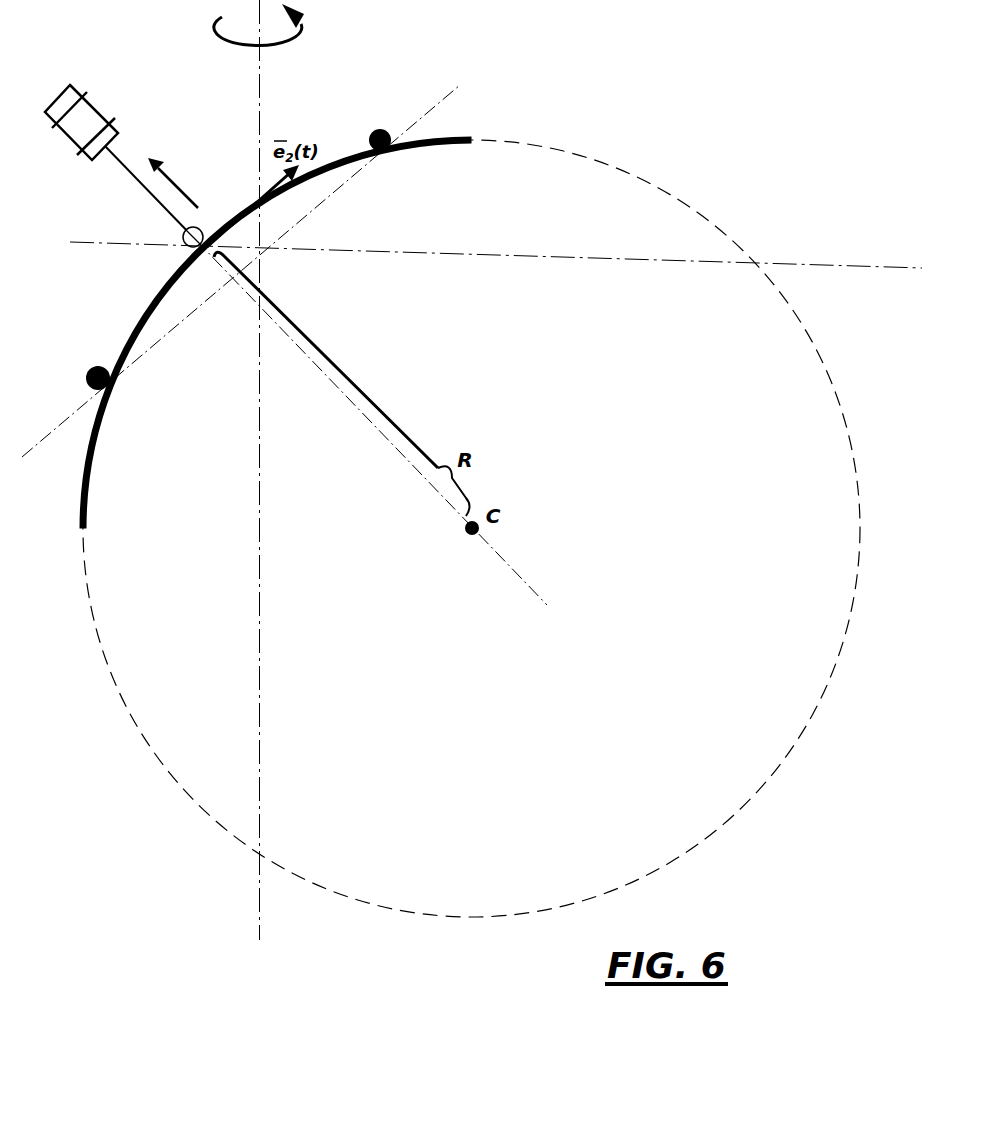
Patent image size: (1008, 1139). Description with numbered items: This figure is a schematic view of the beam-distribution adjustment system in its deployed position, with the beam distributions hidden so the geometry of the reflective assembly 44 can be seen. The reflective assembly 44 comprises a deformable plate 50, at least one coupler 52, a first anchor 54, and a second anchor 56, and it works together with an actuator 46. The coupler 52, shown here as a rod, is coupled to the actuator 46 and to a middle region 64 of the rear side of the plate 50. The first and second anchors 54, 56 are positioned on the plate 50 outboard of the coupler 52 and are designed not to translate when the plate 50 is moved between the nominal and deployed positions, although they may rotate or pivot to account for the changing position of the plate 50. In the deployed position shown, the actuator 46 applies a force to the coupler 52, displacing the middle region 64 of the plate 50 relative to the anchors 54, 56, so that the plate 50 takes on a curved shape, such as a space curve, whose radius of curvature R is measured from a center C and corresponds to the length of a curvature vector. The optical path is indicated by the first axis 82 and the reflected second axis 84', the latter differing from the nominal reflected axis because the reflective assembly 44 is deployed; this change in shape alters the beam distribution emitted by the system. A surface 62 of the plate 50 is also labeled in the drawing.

The reflective assembly 44 is at (90, 306).
The actuator 46 is at (65, 93).
The deformable plate 50 is at (85, 493).
The coupler 52 is at (207, 228).
The first anchor 54 is at (375, 133).
The second anchor 56 is at (97, 370).
The tire surface 62 is at (100, 447).
The middle region 64 is at (170, 275).
The first axis 82 is at (262, 397).
The second axis 84' is at (496, 246).